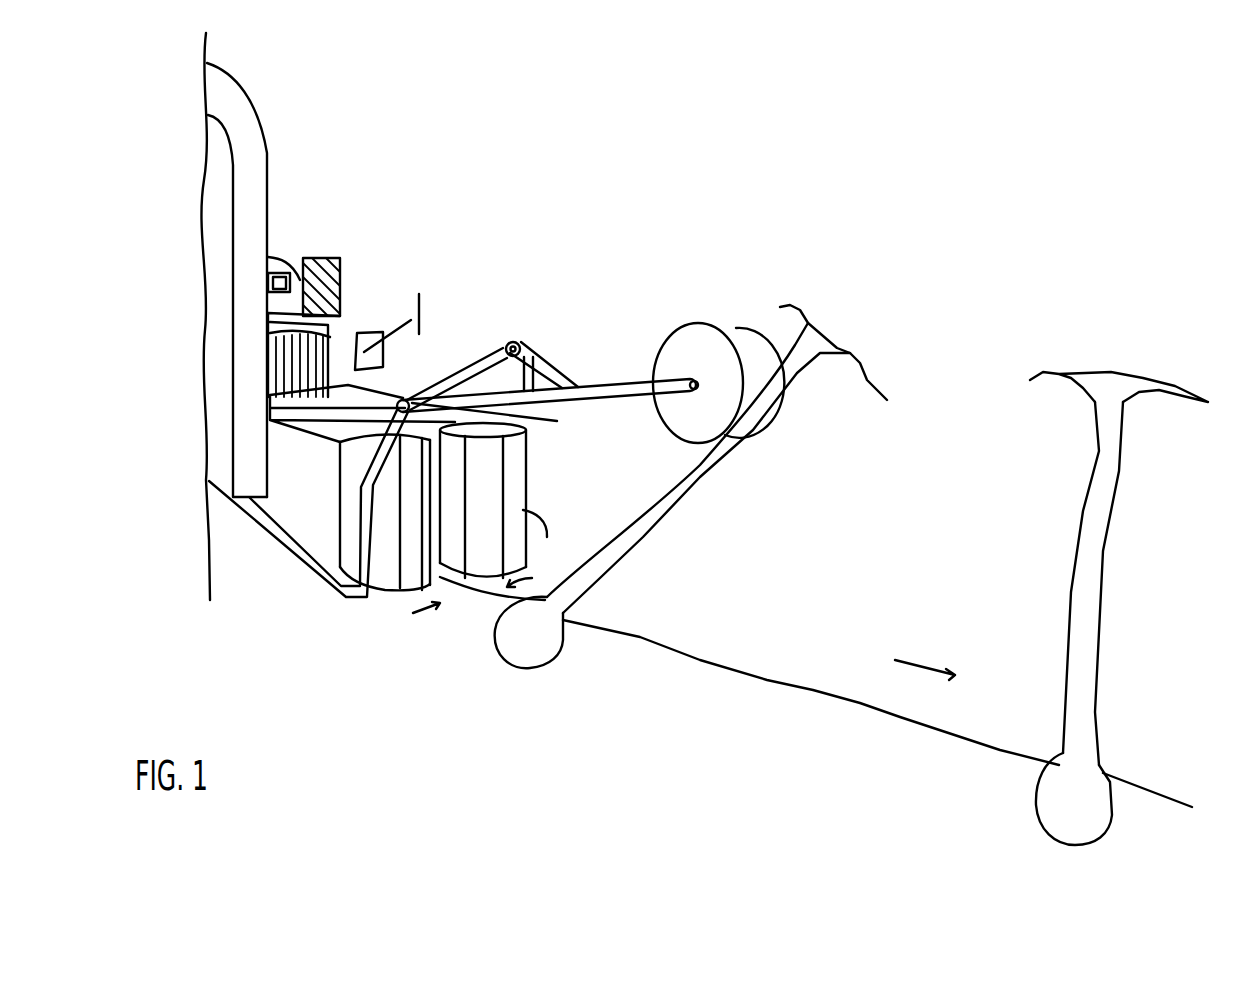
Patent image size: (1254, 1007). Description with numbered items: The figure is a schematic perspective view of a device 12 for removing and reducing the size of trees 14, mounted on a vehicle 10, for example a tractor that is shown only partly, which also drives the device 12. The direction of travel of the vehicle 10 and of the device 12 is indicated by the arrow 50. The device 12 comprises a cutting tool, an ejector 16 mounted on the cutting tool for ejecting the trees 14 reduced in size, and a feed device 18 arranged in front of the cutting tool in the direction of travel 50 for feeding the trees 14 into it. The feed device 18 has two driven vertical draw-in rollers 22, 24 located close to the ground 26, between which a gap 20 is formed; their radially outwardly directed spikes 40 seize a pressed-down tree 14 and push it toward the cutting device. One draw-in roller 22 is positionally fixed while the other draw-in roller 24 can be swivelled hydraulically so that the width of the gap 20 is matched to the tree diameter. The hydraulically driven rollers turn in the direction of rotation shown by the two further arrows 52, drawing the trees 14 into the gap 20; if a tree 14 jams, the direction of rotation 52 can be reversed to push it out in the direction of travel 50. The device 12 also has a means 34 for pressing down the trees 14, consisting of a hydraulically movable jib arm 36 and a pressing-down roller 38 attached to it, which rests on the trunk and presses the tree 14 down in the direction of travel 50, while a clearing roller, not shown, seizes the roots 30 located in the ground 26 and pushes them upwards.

The vehicle 10 is at (298, 244).
The device 12 is at (431, 157).
The tree 14 is at (640, 543).
The ejector 16 is at (232, 103).
The feed device 18 is at (473, 343).
The gap 20 is at (440, 578).
The draw-in roller 22 is at (383, 565).
The draw-in roller 24 is at (513, 481).
The ground 26 is at (813, 690).
The roots 30 is at (538, 653).
The means for pressing down the trees 34 is at (610, 284).
The jib arm 36 is at (594, 390).
The pressing-down roller 38 is at (697, 343).
The spikes 40 is at (543, 538).
The direction of travel 50 is at (921, 663).
The direction of rotation 52 is at (418, 613).